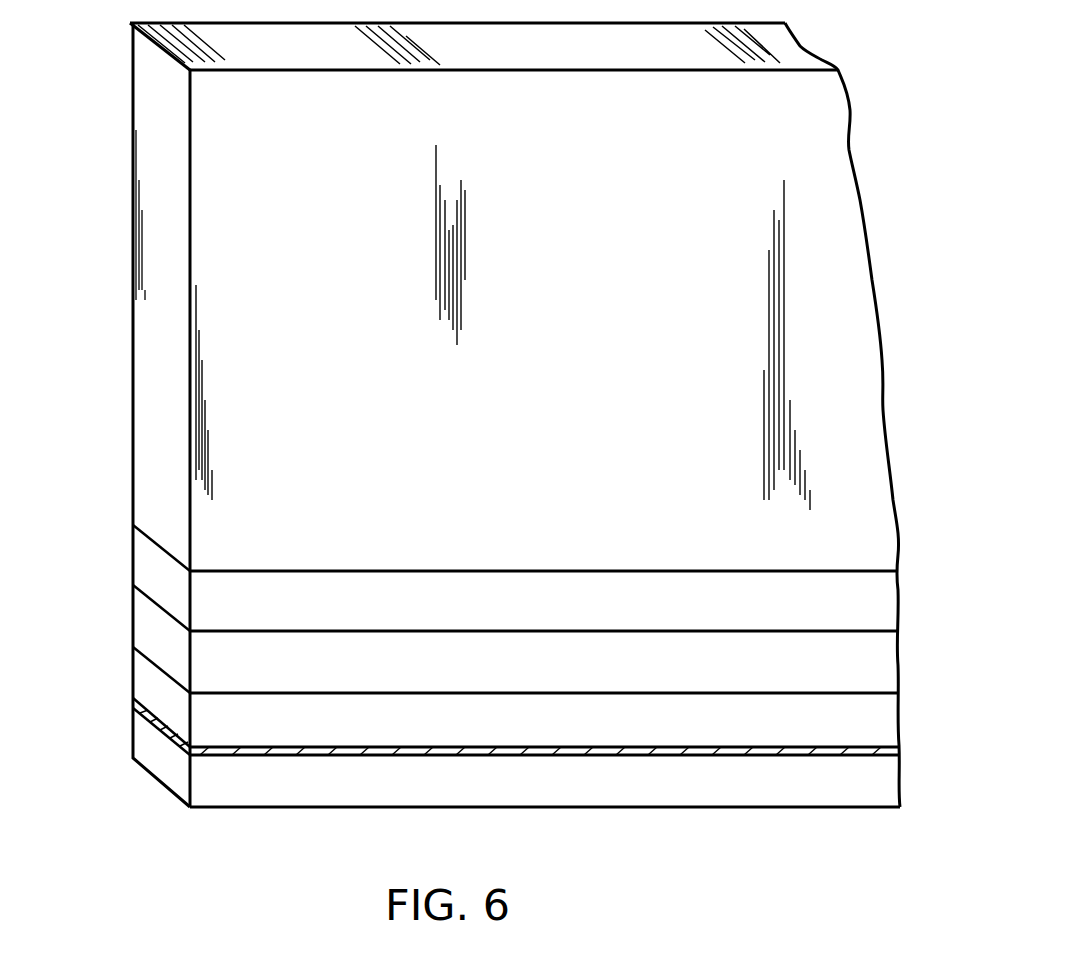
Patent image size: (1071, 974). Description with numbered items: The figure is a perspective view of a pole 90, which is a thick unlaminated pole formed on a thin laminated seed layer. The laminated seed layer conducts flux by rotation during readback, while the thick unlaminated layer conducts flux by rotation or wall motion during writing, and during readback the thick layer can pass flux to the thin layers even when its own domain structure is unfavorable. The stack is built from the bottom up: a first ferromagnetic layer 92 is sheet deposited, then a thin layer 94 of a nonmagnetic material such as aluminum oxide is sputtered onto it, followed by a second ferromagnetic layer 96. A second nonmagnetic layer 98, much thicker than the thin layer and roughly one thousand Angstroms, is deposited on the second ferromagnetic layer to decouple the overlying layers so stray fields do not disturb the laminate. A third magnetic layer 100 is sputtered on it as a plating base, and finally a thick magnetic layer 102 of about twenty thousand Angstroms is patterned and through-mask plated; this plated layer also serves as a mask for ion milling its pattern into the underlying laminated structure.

The pole 90 is at (100, 230).
The first ferromagnetic layer 92 is at (262, 802).
The thin layer of nonmagnetic material 94 is at (138, 701).
The second ferromagnetic layer 96 is at (144, 673).
The second nonmagnetic layer 98 is at (146, 624).
The third magnetic layer 100 is at (146, 571).
The thick magnetic layer 102 is at (147, 450).